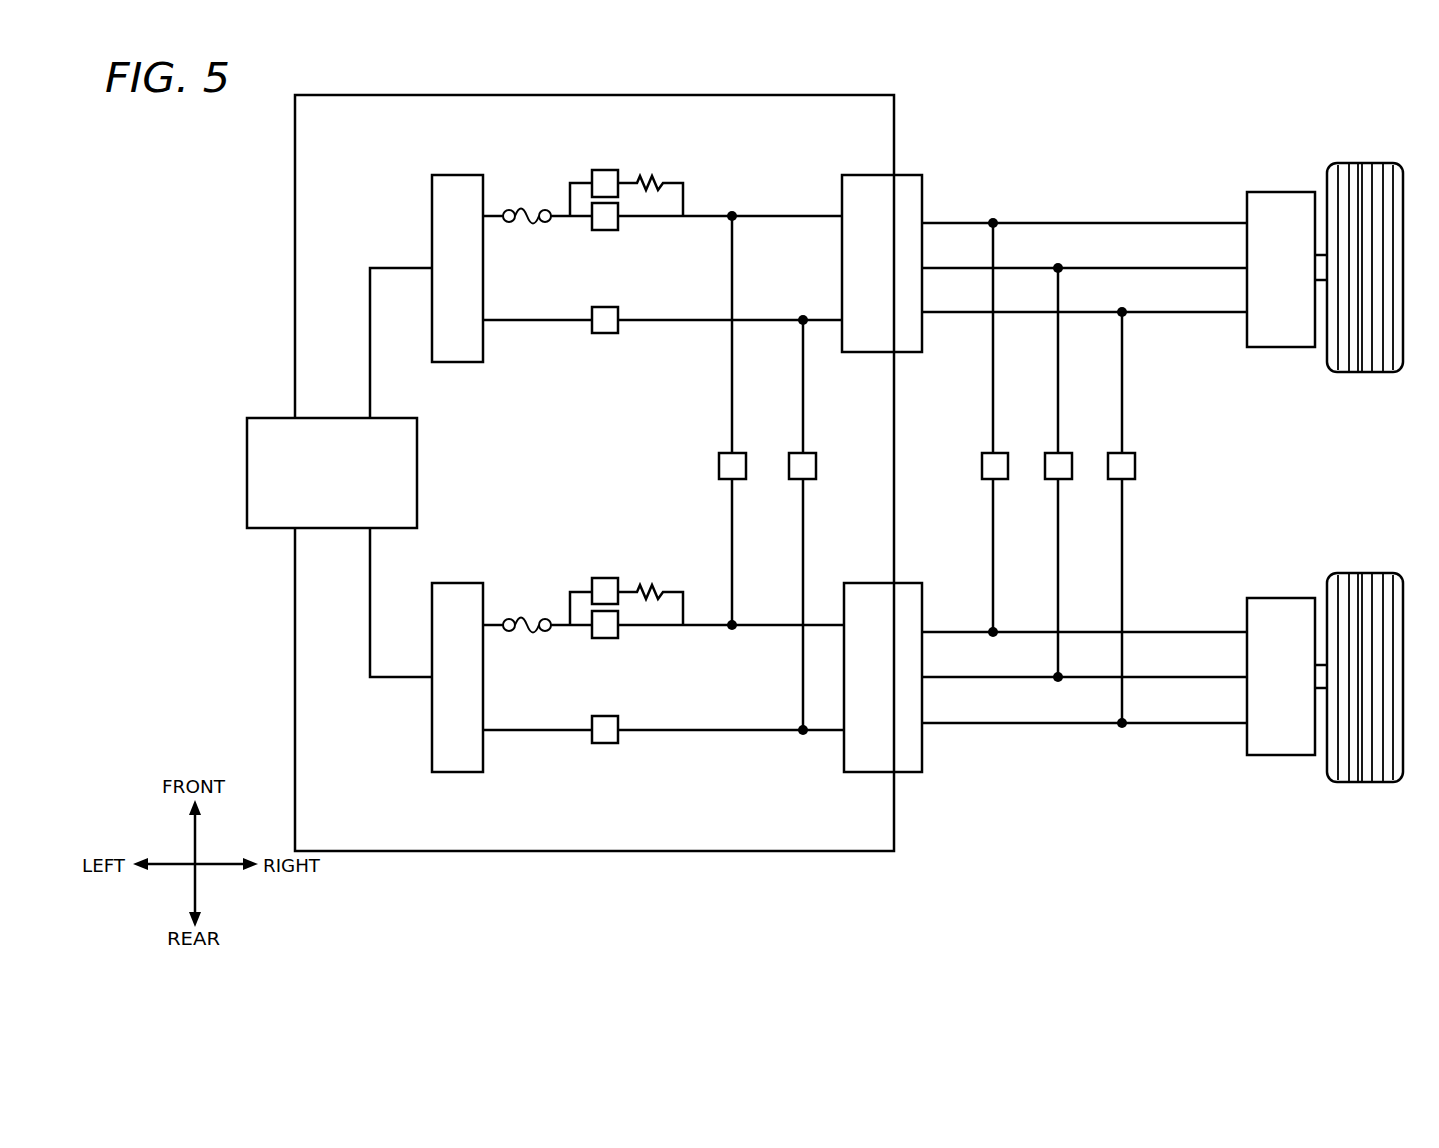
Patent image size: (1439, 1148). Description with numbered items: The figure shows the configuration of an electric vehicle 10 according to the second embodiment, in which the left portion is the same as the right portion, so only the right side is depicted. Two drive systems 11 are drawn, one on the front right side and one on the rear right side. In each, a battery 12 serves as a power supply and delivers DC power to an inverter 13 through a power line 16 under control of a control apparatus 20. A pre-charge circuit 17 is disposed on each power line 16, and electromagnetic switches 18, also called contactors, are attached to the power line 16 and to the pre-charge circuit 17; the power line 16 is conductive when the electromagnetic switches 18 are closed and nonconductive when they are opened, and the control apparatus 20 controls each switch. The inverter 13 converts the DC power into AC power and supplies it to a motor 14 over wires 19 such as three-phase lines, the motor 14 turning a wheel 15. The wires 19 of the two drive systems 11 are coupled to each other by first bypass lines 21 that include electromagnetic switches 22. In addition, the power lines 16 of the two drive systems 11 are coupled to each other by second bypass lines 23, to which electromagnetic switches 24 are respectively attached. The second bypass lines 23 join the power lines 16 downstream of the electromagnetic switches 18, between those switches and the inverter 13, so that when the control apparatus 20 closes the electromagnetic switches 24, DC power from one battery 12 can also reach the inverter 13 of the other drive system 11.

The electric vehicle 10 is at (268, 216).
The drive system 11 is at (1428, 146).
The battery 12 is at (434, 176).
The inverter 13 is at (912, 175).
The motor 14 is at (1280, 190).
The wheel 15 is at (1350, 162).
The power line 16 is at (560, 218).
The pre-charge circuit 17 is at (568, 172).
The electromagnetic switch 18 is at (600, 171).
The wire 19 is at (1123, 221).
The control apparatus 20 is at (268, 418).
The first bypass line 21 is at (993, 403).
The electromagnetic switch 22 is at (990, 454).
The second bypass line 23 is at (732, 403).
The electromagnetic switch 24 is at (726, 454).